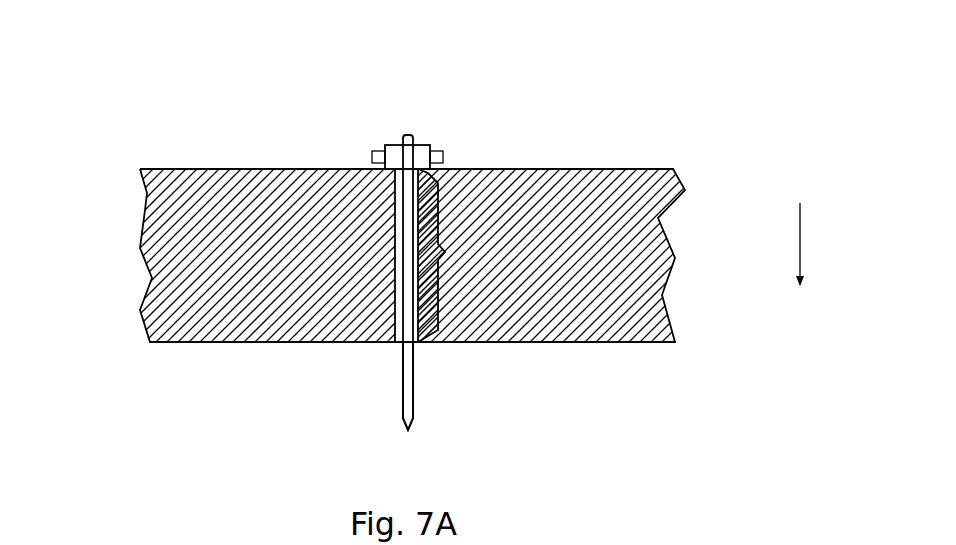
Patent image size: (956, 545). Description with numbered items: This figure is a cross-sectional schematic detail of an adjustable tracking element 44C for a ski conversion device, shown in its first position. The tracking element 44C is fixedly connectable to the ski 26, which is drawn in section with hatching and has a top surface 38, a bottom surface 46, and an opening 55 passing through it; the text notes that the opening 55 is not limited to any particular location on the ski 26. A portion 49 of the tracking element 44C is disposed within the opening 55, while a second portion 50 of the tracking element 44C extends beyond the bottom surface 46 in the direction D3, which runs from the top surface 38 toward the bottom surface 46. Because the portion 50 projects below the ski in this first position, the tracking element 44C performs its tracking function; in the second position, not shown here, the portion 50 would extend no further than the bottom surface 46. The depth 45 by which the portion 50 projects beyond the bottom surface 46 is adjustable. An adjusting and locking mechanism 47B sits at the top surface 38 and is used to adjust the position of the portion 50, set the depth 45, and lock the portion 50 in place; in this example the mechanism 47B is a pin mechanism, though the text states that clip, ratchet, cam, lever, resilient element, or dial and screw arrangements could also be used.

The ski 26 is at (177, 240).
The top surface 38 is at (233, 168).
The bottom surface 46 is at (190, 342).
The tracking element 44C is at (407, 133).
The adjusting and locking mechanism 47B is at (420, 145).
The portion of tracking element 49 is at (433, 255).
The opening 55 is at (395, 305).
The portion of tracking element 50 is at (402, 363).
The depth 45 is at (483, 427).
The direction D3 is at (800, 233).